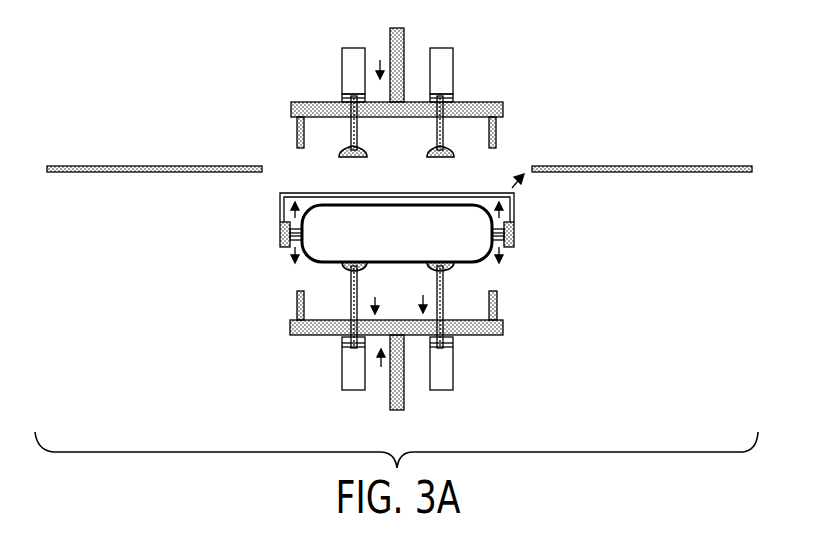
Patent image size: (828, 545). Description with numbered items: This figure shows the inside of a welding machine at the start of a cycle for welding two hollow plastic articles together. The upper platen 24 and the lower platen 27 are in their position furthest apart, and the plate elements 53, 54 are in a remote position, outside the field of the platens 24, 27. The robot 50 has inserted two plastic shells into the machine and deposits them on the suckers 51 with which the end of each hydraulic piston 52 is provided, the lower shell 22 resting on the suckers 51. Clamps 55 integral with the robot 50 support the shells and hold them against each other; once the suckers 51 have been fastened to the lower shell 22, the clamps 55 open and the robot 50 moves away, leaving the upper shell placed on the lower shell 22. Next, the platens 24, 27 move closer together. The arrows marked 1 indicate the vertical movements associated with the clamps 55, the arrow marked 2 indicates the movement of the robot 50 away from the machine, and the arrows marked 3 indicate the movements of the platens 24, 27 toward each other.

The vertical movement direction of end blocks 1 is at (397, 236).
The movement direction of frame 2 is at (521, 192).
The movement direction of plates and posts 3 is at (396, 204).
The lower shell 22 is at (495, 265).
The platen 24 is at (479, 103).
The platen 27 is at (498, 335).
The robot 50 is at (517, 215).
The suckers 51 is at (352, 270).
The hydraulic piston 52 is at (348, 350).
The plate element 53 is at (177, 167).
The plate element 54 is at (612, 167).
The clamps 55 is at (280, 235).